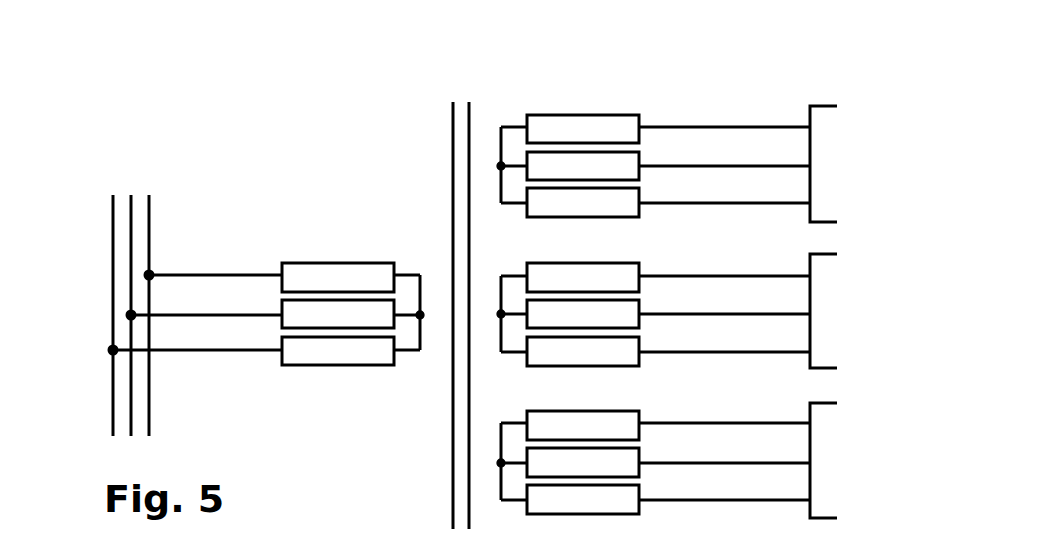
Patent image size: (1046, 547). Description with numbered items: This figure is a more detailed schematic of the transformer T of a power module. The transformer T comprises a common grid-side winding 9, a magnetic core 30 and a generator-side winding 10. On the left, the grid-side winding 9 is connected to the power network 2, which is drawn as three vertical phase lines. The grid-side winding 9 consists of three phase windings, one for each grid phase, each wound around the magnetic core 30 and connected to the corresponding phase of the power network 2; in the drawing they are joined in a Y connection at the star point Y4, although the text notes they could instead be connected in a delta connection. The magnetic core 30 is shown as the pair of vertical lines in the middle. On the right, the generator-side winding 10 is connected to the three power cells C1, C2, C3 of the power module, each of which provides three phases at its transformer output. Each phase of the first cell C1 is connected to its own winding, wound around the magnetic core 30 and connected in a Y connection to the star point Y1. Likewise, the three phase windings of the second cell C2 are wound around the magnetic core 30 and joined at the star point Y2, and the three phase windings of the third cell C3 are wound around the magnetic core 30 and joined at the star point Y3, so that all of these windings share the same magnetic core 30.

The power network 2 is at (126, 192).
The common grid-side winding 9 is at (355, 242).
The generator-side winding 10 is at (583, 102).
The magnetic core 30 is at (452, 440).
The transformer T is at (302, 170).
The star point Y1 is at (500, 461).
The star point Y2 is at (500, 312).
The star point Y3 is at (500, 164).
The star point Y4 is at (421, 313).
The first power cell C1 is at (828, 460).
The second power cell C2 is at (828, 311).
The third power cell C3 is at (828, 164).